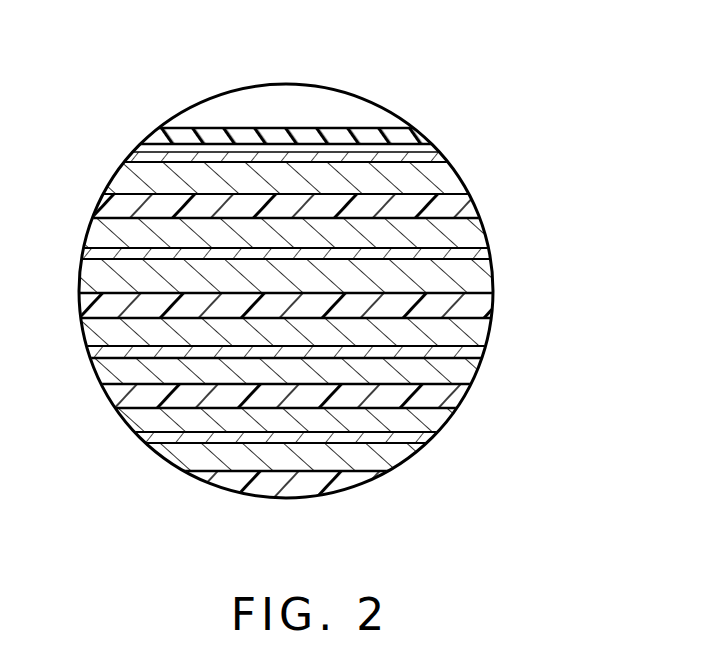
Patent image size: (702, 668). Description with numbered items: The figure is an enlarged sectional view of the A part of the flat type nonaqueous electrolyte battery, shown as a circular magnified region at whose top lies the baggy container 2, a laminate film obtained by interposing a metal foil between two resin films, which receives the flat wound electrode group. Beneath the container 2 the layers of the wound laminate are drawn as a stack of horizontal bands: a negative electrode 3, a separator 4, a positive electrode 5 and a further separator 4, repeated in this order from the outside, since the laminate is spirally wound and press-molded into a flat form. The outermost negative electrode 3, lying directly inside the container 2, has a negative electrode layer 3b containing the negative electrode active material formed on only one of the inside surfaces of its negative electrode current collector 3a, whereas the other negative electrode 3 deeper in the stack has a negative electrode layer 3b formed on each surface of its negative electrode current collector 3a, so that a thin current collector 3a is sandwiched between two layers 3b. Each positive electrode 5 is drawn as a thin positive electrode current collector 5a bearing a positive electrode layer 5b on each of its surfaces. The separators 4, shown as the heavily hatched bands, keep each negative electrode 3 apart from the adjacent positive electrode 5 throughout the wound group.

The A part A is at (190, 118).
The baggy container 2 is at (420, 132).
The negative electrode 3 is at (340, 267).
The negative electrode current collector 3a is at (435, 158).
The negative electrode layer 3b is at (443, 180).
The separator 4 is at (98, 205).
The positive electrode 5 is at (341, 365).
The positive electrode current collector 5a is at (487, 255).
The positive electrode layer 5b is at (467, 225).